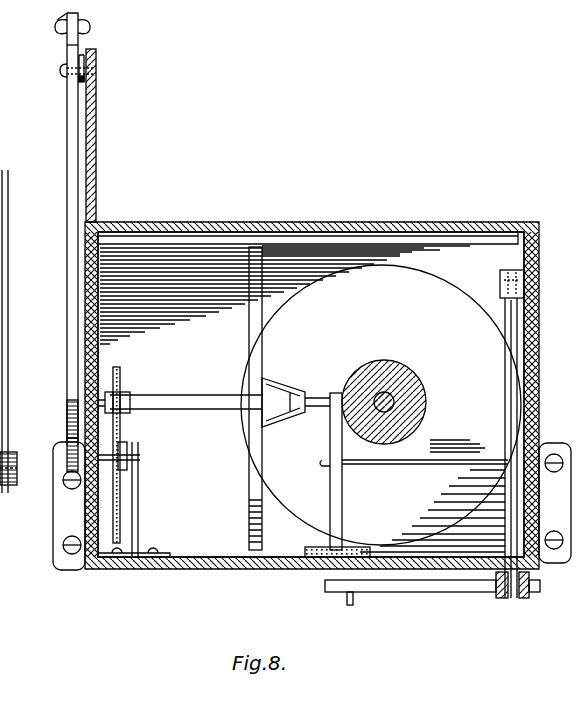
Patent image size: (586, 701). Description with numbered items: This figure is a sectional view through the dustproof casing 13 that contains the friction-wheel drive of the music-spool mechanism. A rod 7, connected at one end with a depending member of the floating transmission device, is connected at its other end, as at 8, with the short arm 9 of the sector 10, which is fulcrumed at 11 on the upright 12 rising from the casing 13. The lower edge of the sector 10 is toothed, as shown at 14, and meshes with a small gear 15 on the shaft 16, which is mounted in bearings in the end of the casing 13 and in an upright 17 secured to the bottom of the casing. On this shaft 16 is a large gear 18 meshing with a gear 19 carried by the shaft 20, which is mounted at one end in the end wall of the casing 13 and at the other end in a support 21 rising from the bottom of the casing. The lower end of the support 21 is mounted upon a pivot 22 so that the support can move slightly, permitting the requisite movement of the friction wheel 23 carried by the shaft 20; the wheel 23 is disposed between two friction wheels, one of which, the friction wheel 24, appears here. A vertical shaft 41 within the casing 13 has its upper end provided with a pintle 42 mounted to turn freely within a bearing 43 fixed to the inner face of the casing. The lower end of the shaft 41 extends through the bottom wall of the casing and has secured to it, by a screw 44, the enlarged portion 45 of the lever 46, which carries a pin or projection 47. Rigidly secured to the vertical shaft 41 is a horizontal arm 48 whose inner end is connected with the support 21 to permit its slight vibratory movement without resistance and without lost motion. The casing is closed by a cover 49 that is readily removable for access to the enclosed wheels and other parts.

The rod 7 is at (90, 26).
The connection 8 is at (58, 19).
The short arm 9 is at (67, 47).
The sector 10 is at (67, 191).
The fulcrum 11 is at (60, 72).
The upright 12 is at (96, 158).
The dustproof casing 13 is at (86, 260).
The teeth 14 is at (67, 420).
The small gear 15 is at (67, 442).
The shaft 16 is at (122, 447).
The upright 17 is at (138, 473).
The large gear 18 is at (120, 513).
The gear 19 is at (124, 396).
The shaft 20 is at (183, 405).
The support 21 is at (330, 441).
The pivot 22 is at (306, 552).
The friction wheel 23 is at (249, 338).
The friction wheel 24 is at (381, 405).
The vertical shaft 41 is at (512, 388).
The pintle 42 is at (524, 288).
The bearing 43 is at (500, 282).
The screw 44 is at (540, 594).
The enlarged portion 45 is at (500, 598).
The lever 46 is at (420, 592).
The pin 47 is at (353, 600).
The horizontal arm 48 is at (456, 462).
The cover 49 is at (288, 232).